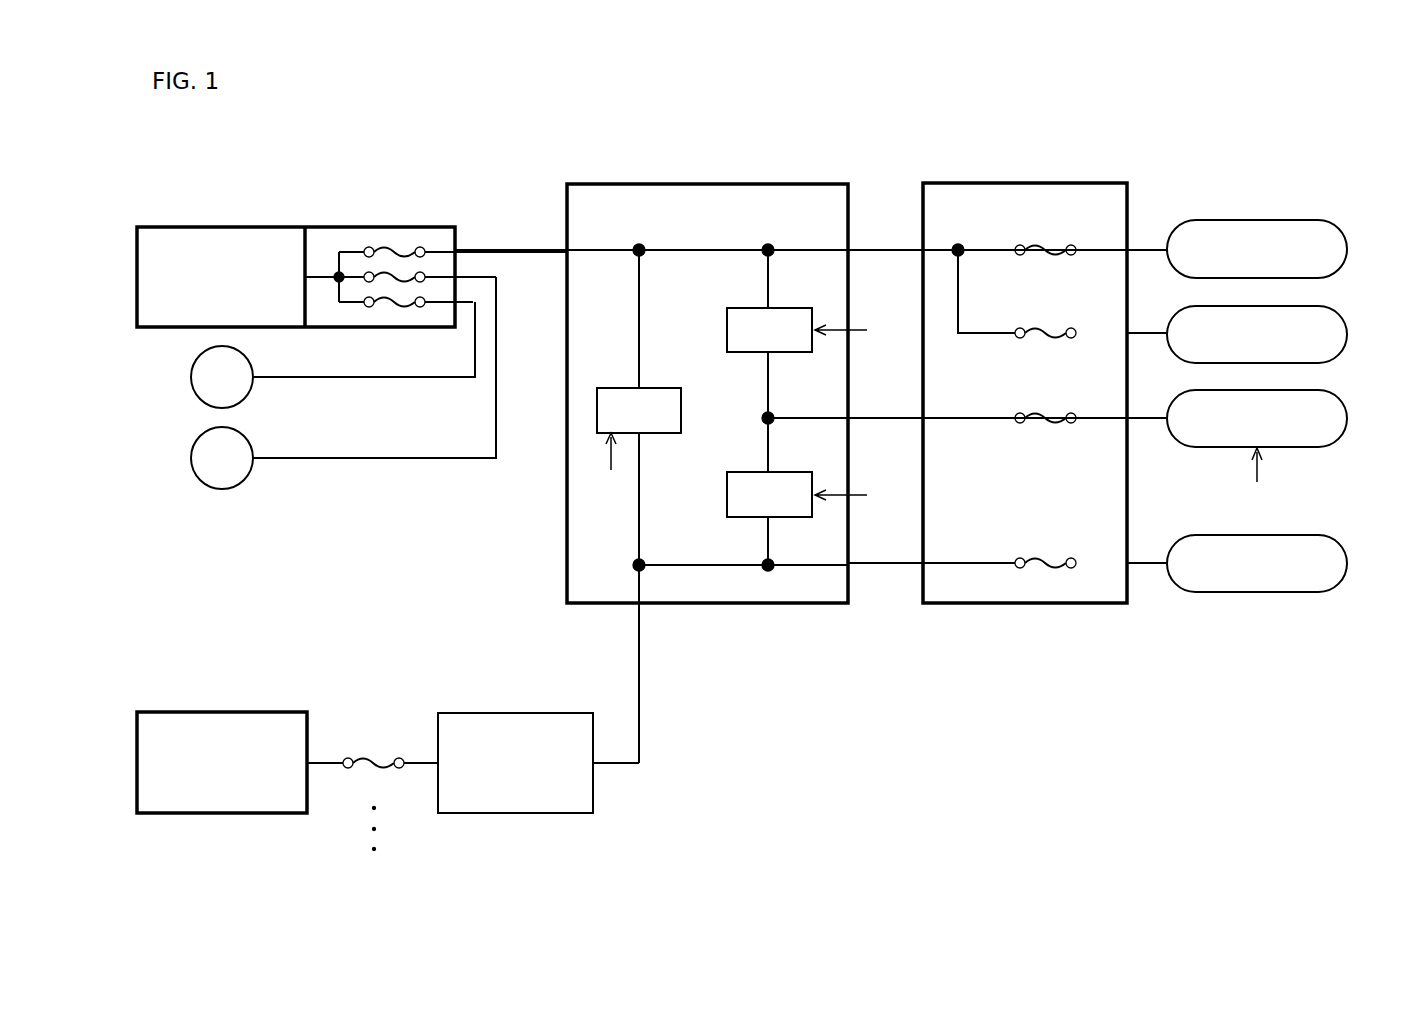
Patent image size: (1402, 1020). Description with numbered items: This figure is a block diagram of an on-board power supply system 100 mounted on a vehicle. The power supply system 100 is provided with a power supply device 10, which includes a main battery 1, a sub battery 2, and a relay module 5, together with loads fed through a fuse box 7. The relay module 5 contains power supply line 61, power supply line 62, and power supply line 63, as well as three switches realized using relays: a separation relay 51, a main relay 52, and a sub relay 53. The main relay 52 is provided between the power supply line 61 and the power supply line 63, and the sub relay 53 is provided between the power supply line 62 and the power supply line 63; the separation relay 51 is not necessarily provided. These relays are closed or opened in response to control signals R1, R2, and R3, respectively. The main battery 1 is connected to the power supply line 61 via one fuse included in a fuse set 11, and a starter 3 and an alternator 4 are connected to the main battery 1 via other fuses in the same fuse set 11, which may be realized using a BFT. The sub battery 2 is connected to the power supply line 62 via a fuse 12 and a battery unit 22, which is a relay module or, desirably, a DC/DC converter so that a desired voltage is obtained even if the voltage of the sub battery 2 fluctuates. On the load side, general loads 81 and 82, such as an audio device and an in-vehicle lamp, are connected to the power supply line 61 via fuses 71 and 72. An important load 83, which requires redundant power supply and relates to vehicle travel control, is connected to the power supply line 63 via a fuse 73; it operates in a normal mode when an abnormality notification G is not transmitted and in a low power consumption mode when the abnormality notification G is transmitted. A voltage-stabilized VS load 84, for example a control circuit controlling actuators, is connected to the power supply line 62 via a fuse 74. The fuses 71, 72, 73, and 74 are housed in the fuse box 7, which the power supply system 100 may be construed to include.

The main battery 1 is at (213, 225).
The fuse set 11 is at (378, 225).
The starter 3 is at (191, 378).
The alternator 4 is at (191, 459).
The power supply line 61 is at (516, 247).
The relay module 5 is at (783, 182).
The separation relay 51 is at (613, 387).
The main relay 52 is at (743, 308).
The sub relay 53 is at (743, 472).
The control signal R1 is at (612, 465).
The control signal R2 is at (857, 331).
The control signal R3 is at (857, 496).
The power supply line 63 is at (884, 418).
The power supply line 62 is at (641, 660).
The fuse box 7 is at (1073, 183).
The fuse 71 is at (1048, 246).
The fuse 72 is at (1048, 329).
The fuse 73 is at (1048, 414).
The fuse 74 is at (1048, 559).
The general load 81 is at (1350, 249).
The general load 82 is at (1350, 334).
The important load 83 is at (1350, 418).
The abnormality notification G is at (1257, 479).
The VS load 84 is at (1350, 563).
The sub battery 2 is at (214, 712).
The fuse 12 is at (384, 758).
The battery unit 22 is at (512, 712).
The power supply device 10 is at (777, 706).
The power supply system 100 is at (1045, 664).